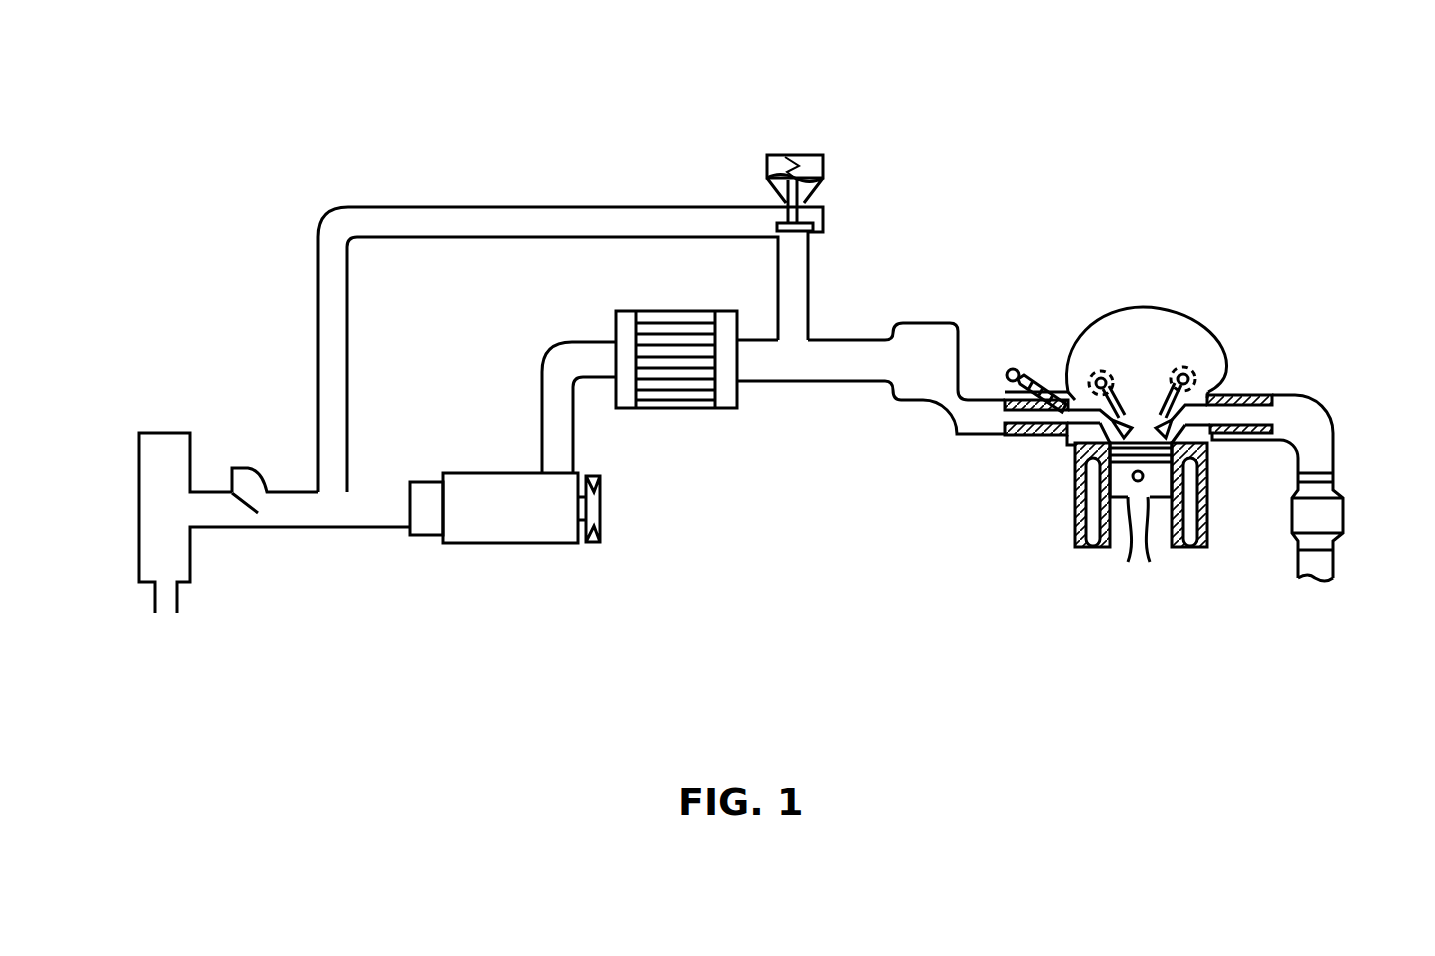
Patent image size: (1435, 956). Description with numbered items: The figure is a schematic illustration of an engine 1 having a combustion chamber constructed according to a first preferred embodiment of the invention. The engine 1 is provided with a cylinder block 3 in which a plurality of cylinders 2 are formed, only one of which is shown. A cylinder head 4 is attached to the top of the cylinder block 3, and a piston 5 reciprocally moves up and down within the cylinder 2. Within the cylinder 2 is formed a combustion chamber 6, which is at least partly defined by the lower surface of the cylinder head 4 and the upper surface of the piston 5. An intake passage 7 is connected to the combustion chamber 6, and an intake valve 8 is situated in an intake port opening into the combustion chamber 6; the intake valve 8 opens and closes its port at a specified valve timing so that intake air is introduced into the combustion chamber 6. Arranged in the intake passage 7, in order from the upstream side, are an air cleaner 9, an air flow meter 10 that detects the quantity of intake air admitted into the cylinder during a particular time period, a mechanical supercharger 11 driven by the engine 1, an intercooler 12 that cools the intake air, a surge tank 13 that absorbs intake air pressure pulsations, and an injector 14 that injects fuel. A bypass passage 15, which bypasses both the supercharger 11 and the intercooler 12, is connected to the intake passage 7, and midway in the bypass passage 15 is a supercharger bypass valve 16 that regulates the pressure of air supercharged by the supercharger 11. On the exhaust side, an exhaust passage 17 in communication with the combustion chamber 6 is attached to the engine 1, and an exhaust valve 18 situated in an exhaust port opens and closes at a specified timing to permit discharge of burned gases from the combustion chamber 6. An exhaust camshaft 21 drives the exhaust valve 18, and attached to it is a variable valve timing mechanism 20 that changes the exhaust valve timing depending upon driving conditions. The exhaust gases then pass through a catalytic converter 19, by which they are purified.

The engine 1 is at (1030, 521).
The cylinder 2 is at (1210, 472).
The cylinder block 3 is at (1165, 540).
The cylinder head 4 is at (1228, 385).
The piston 5 is at (1097, 545).
The combustion chamber 6 is at (1100, 445).
The intake passage 7 is at (973, 417).
The intake valve 8 is at (1132, 405).
The air cleaner 9 is at (193, 565).
The air flow meter 10 is at (247, 468).
The mechanical supercharger 11 is at (478, 543).
The intercooler 12 is at (680, 408).
The surge tank 13 is at (930, 322).
The injector 14 is at (1015, 368).
The bypass passage 15 is at (555, 207).
The supercharger bypass valve 16 is at (767, 170).
The exhaust passage 17 is at (1285, 414).
The exhaust valve 18 is at (1147, 405).
The catalytic converter 19 is at (1290, 528).
The variable valve timing mechanism 20 is at (1243, 325).
The exhaust camshaft 21 is at (1188, 368).